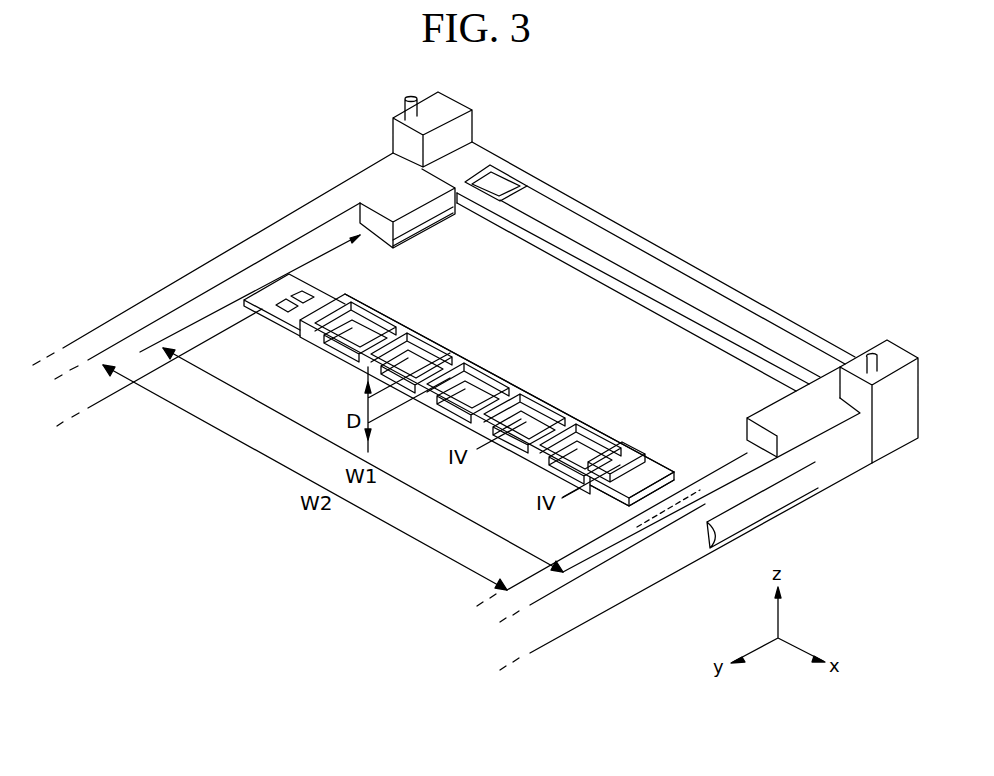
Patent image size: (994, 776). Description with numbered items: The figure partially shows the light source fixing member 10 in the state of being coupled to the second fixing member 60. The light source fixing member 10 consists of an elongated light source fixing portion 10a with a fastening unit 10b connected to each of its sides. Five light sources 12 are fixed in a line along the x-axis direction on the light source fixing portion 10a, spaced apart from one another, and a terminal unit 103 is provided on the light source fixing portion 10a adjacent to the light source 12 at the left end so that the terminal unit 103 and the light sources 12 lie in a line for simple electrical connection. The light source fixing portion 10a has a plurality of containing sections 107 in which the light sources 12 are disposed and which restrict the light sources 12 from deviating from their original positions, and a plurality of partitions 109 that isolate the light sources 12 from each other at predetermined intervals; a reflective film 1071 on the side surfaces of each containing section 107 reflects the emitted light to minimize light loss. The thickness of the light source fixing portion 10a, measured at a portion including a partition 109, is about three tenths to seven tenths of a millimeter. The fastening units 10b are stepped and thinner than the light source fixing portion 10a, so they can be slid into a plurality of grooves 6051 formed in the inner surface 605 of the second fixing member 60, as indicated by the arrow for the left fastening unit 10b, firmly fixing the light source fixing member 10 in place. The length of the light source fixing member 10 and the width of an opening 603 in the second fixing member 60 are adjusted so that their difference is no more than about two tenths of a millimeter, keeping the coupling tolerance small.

The light source 12 is at (177, 283).
The light source fixing member 10 is at (430, 350).
The light source fixing portion 10a is at (452, 352).
The fastening unit 10b is at (300, 337).
The terminal unit 103 is at (310, 290).
The partition 109 is at (490, 374).
The reflective film 1071 is at (565, 432).
The containing section 107 is at (624, 447).
The inner surface 605 is at (405, 225).
The groove 6051 is at (422, 213).
The opening 603 is at (505, 250).
The second fixing member 60 is at (830, 463).